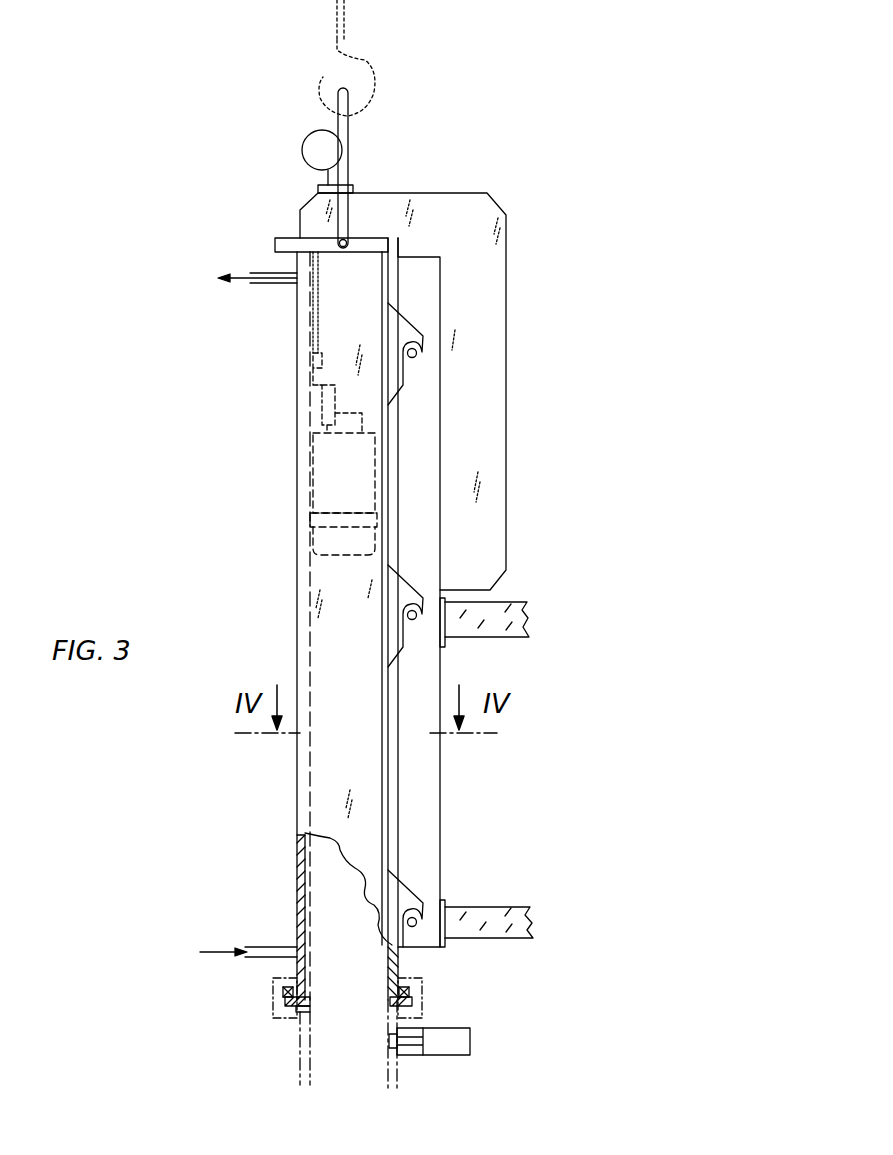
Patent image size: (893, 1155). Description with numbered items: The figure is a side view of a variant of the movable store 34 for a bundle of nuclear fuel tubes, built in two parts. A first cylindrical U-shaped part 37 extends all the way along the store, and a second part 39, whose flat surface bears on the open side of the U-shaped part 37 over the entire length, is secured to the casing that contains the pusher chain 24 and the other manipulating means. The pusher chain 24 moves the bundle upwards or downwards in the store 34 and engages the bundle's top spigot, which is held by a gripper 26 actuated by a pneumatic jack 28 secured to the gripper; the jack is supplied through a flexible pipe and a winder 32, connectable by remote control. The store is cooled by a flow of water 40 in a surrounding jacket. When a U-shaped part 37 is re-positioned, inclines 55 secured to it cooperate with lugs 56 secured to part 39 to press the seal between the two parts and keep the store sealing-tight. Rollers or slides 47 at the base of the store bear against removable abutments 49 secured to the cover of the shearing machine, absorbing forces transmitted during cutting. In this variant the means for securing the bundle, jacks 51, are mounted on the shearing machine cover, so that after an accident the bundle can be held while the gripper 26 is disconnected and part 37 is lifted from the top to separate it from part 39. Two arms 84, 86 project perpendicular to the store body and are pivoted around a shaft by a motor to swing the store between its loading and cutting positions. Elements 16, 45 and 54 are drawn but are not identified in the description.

The pipe 16 is at (300, 1055).
The pusher chain 24 is at (316, 326).
The gripper 26 is at (310, 538).
The pneumatic jack 28 is at (313, 470).
The winder 32 is at (312, 148).
The store 34 is at (284, 632).
The cylindrical U-shaped part 37 is at (282, 238).
The casing 39 is at (518, 444).
The flow of water 40 is at (270, 947).
The ring 45 is at (300, 1011).
The rollers or slides 47 is at (284, 992).
The abutments 49 is at (422, 990).
The jacks 51 is at (455, 1048).
The rod 54 is at (348, 152).
The inclines 55 is at (415, 347).
The lugs 56 is at (415, 359).
The arm 84 is at (510, 605).
The arm 86 is at (505, 910).